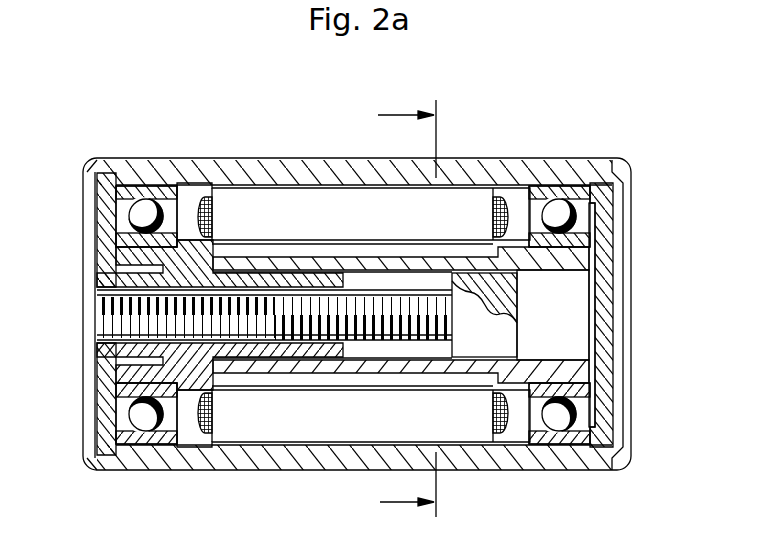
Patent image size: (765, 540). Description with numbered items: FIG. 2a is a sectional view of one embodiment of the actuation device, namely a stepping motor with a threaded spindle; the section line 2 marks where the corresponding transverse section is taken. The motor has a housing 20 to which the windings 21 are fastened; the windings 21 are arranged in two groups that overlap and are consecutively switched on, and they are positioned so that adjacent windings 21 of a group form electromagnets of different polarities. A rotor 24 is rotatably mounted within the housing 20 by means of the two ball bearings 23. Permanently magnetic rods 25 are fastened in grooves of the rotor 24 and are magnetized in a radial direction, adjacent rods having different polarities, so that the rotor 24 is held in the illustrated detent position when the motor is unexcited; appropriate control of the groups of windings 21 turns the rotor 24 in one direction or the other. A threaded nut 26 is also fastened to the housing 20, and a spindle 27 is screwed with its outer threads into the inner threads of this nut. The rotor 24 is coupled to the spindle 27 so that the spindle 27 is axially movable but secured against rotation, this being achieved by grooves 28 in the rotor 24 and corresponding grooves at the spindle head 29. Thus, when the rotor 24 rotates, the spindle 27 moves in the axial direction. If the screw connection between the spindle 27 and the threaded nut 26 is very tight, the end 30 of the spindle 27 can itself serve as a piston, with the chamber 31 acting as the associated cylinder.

The section line 2- 2 is at (415, 297).
The housing 20 is at (191, 183).
The windings 21 is at (497, 203).
The ball bearings 23 is at (131, 184).
The rotor 24 is at (586, 258).
The permanently magnetic rods 25 is at (472, 256).
The threaded nut 26 is at (107, 397).
The spindle 27 is at (447, 327).
The grooves 28 is at (589, 275).
The spindle head 29 is at (510, 329).
The end of the spindle 30 is at (274, 315).
The chamber 31 is at (98, 308).